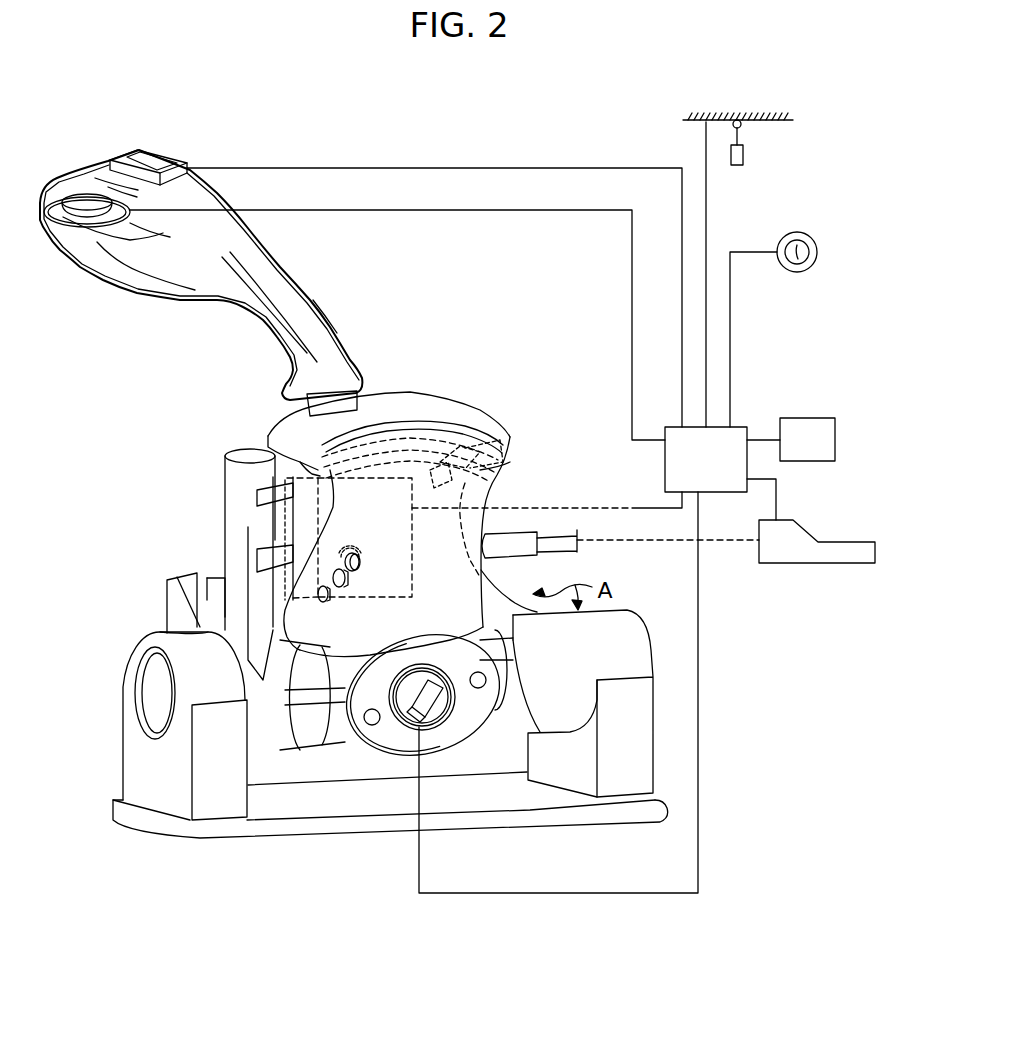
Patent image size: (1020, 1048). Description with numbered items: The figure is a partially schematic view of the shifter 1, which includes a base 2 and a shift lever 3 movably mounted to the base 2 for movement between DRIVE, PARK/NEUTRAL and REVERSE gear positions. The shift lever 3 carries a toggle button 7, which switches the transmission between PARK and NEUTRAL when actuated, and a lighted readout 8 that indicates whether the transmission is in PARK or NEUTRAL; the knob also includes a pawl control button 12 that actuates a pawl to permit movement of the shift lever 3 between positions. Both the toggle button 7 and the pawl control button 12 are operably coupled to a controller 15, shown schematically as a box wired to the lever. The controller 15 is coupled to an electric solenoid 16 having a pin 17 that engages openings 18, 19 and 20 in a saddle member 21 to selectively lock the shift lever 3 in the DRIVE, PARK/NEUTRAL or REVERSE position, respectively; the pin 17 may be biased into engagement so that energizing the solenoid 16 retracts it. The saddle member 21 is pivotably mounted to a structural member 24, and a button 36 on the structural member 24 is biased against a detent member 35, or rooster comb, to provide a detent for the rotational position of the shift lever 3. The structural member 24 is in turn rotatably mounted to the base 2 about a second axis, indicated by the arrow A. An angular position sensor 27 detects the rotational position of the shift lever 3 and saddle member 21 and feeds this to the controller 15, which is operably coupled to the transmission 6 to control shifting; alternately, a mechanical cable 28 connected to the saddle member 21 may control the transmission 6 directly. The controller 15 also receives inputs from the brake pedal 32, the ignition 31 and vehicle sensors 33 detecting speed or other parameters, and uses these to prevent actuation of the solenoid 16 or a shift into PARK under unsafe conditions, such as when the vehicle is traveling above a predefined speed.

The shifter 1 is at (215, 416).
The base 2 is at (113, 720).
The shift lever 3 is at (274, 350).
The transmission 6 is at (800, 543).
The toggle button 7 is at (172, 158).
The lighted readout 8 is at (147, 158).
The pawl control button 12 is at (82, 202).
The controller 15 is at (680, 476).
The electric solenoid 16 is at (270, 523).
The pin 17 is at (330, 550).
The opening 18 is at (325, 593).
The opening 19 is at (343, 587).
The opening 20 is at (363, 570).
The saddle member 21 is at (480, 482).
The structural member 24 is at (232, 483).
The angular position sensor 27 is at (403, 717).
The mechanical cable 28 is at (557, 555).
The ignition 31 is at (802, 235).
The brake pedal 32 is at (742, 137).
The sensors 33 is at (807, 437).
The detent member 35 is at (460, 455).
The button 36 is at (448, 457).